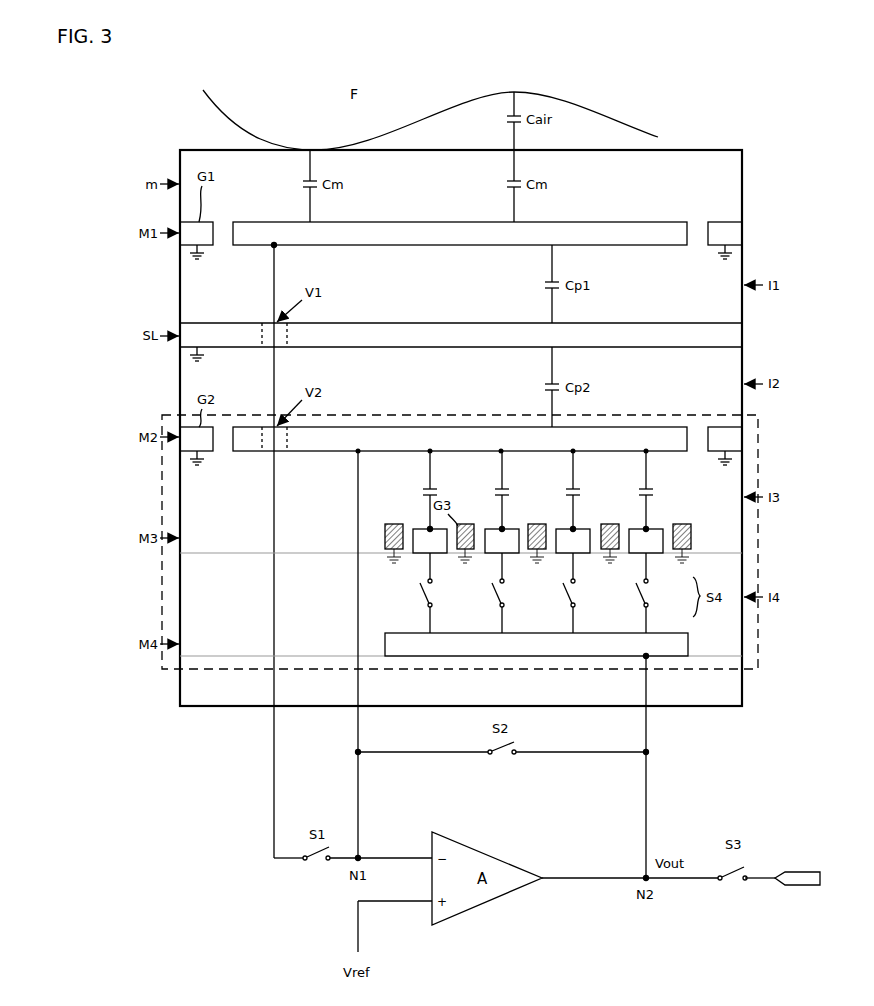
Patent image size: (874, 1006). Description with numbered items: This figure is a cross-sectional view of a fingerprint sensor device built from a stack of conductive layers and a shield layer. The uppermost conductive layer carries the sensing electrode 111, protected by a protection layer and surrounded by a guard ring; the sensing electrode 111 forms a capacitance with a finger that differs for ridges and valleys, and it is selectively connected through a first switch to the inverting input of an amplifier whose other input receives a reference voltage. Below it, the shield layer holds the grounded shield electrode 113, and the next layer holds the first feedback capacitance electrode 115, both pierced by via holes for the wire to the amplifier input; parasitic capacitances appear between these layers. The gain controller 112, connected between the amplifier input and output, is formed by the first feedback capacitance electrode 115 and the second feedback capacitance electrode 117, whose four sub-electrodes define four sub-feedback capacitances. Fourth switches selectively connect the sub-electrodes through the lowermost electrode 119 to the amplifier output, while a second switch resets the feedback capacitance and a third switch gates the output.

The sensing electrode 111 is at (631, 222).
The gain controller 112 is at (758, 440).
The shield electrode 113 is at (634, 323).
The first feedback capacitance electrode 115 is at (634, 427).
The second feedback capacitance electrode 117 is at (537, 542).
The lowermost electrode 119 is at (690, 644).